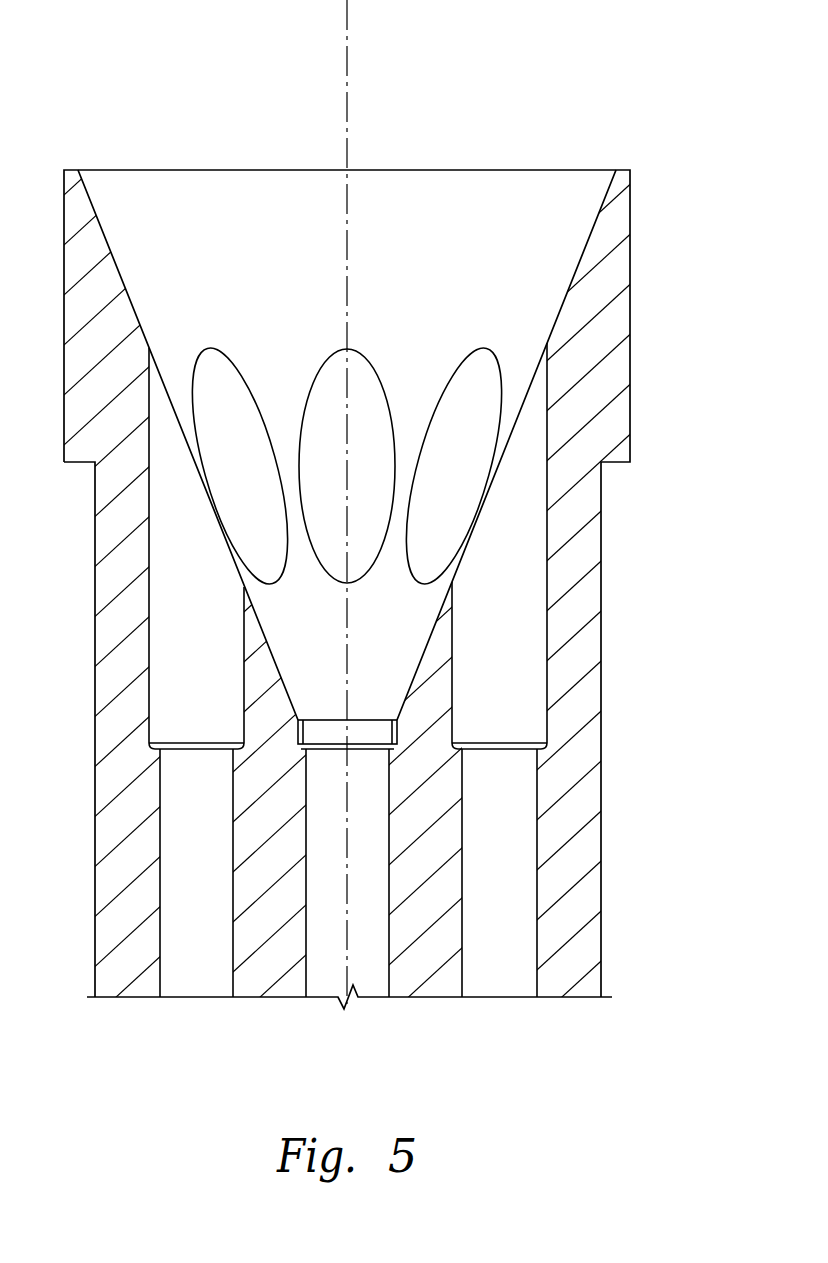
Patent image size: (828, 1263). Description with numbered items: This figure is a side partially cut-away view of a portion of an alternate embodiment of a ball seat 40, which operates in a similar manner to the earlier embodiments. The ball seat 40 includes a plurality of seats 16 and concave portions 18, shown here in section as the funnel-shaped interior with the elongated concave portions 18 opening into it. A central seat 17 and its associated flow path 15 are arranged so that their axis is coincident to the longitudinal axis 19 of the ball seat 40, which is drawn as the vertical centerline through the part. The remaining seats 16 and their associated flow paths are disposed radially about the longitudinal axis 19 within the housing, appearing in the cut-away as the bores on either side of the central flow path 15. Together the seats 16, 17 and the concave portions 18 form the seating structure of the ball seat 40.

The ball seat 40 is at (604, 81).
The longitudinal axis 19 is at (349, 57).
The concave portions 18 is at (478, 367).
The seats 16 is at (185, 746).
The seat 17 is at (370, 750).
The flow path 15 is at (326, 768).